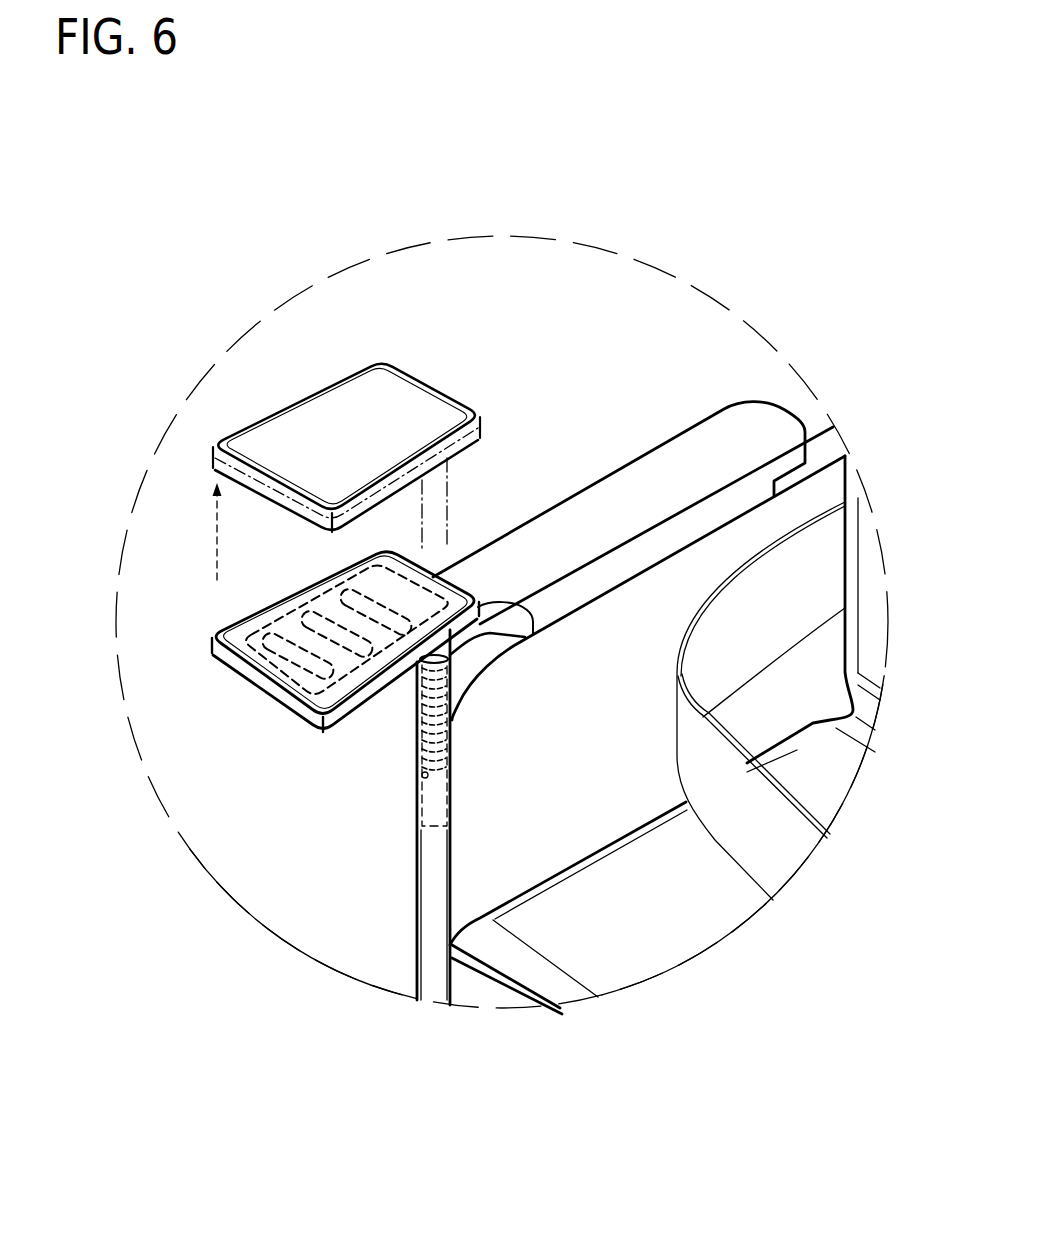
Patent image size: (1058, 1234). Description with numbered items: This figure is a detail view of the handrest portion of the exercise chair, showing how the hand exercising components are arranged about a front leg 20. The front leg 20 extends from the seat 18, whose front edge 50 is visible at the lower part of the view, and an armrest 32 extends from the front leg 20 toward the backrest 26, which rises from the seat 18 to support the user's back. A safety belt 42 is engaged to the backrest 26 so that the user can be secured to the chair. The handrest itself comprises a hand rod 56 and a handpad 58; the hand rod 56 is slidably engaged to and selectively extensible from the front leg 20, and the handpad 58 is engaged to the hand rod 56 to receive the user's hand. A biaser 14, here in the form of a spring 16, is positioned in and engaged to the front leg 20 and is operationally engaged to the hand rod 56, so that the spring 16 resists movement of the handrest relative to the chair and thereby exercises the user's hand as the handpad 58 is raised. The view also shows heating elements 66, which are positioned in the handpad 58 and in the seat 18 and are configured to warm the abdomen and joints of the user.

The biaser 14 is at (413, 730).
The spring 16 is at (413, 758).
The seat 18 is at (690, 933).
The front leg 20 is at (410, 953).
The backrest 26 is at (873, 614).
The armrest 32 is at (655, 490).
The safety belt 42 is at (785, 597).
The front edge 50 is at (472, 985).
The hand rod 56 is at (422, 829).
The handpad 58 is at (243, 685).
The heating element 66 is at (318, 623).